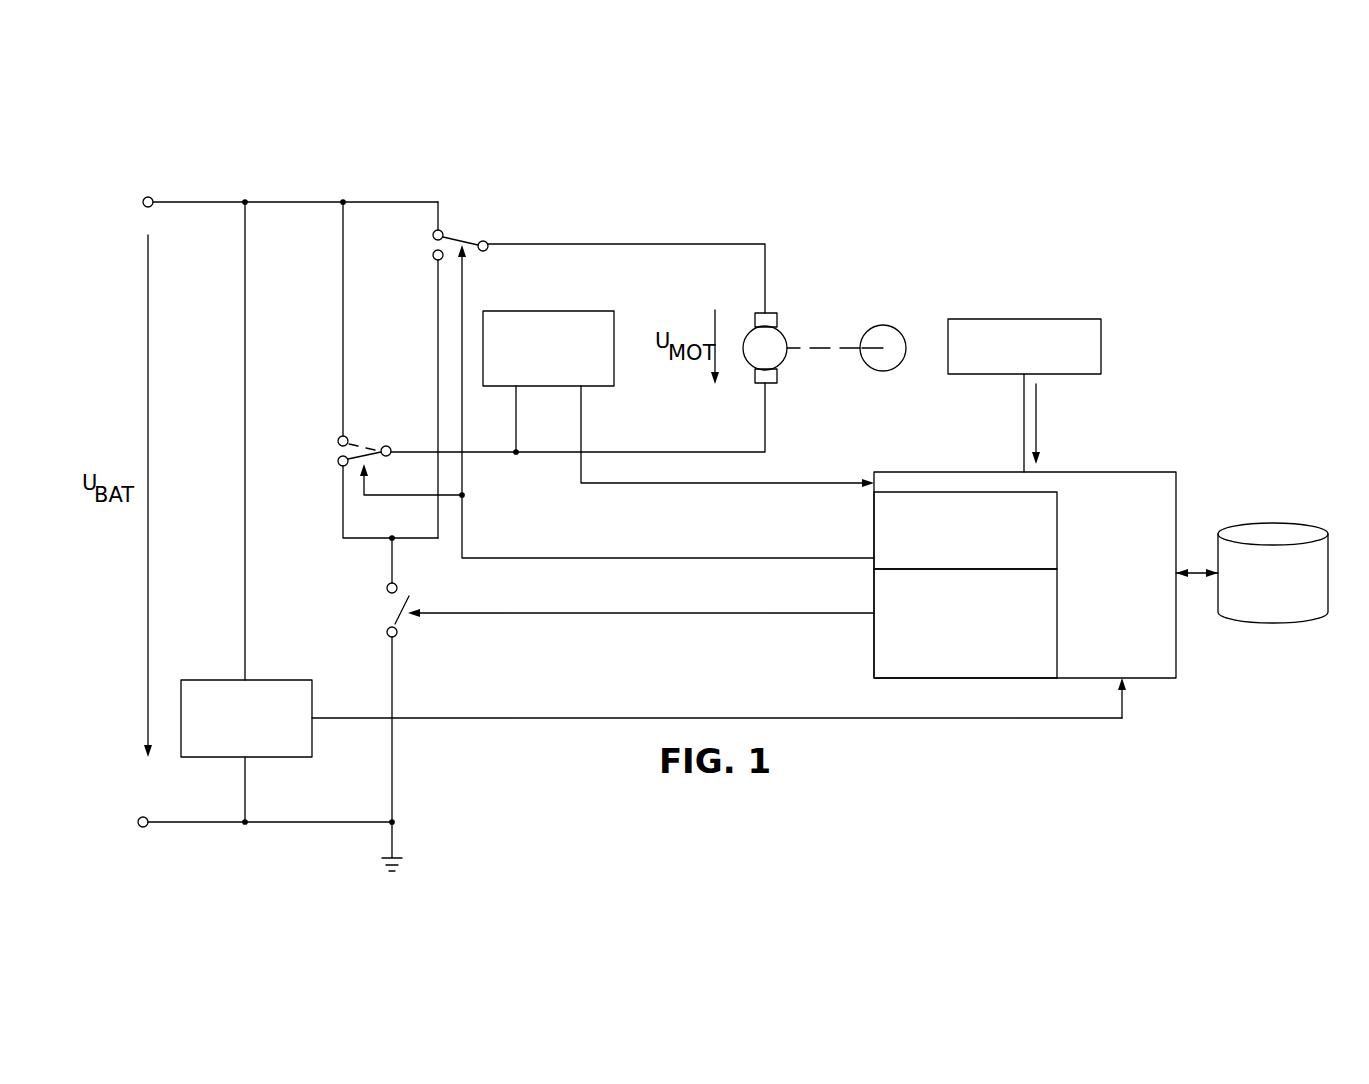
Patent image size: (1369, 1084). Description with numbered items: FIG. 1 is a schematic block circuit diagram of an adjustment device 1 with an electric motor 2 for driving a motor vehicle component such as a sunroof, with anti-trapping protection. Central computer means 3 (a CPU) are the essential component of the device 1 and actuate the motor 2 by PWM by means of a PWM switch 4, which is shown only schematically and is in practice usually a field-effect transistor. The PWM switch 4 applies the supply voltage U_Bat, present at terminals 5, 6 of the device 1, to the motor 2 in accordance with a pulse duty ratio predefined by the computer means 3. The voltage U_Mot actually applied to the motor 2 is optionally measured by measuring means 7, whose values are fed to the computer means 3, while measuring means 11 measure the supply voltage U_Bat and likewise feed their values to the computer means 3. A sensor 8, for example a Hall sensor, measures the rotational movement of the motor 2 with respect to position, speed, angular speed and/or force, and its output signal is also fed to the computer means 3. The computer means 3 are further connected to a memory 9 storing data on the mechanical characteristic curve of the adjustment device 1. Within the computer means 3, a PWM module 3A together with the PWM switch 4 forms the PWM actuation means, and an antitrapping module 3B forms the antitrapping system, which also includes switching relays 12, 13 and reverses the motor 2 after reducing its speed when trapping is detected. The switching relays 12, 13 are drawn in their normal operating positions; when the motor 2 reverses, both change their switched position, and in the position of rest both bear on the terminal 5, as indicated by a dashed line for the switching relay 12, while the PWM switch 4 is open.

The adjustment device 1 is at (930, 219).
The electric motor 2 is at (786, 334).
The computer means 3 is at (1015, 595).
The PWM module 3A is at (874, 656).
The antitrapping module 3B is at (874, 530).
The PWM switch 4 is at (414, 634).
The terminal 5 is at (143, 198).
The terminal 6 is at (138, 827).
The measuring means 7 is at (549, 311).
The sensor 8 is at (1103, 343).
The memory 9 is at (1273, 623).
The measuring means 11 is at (213, 758).
The switching relay 12 is at (352, 458).
The switching relay 13 is at (479, 241).